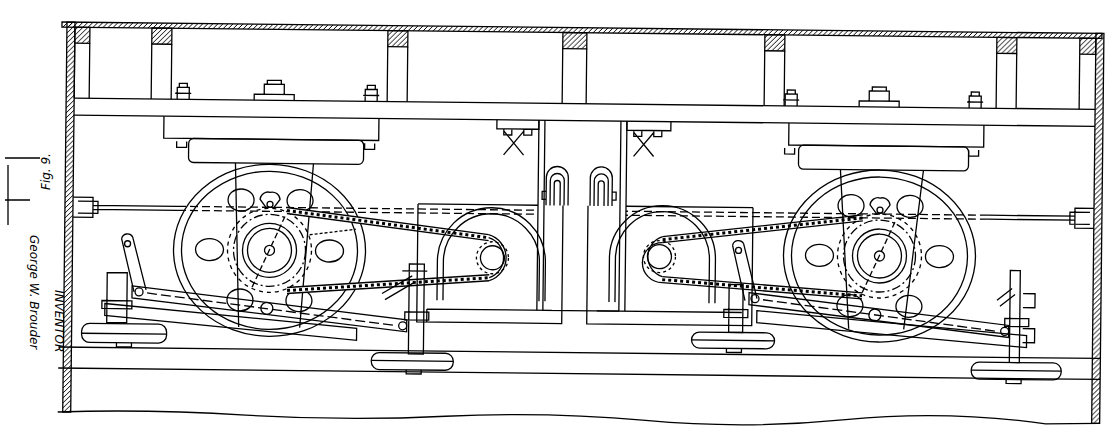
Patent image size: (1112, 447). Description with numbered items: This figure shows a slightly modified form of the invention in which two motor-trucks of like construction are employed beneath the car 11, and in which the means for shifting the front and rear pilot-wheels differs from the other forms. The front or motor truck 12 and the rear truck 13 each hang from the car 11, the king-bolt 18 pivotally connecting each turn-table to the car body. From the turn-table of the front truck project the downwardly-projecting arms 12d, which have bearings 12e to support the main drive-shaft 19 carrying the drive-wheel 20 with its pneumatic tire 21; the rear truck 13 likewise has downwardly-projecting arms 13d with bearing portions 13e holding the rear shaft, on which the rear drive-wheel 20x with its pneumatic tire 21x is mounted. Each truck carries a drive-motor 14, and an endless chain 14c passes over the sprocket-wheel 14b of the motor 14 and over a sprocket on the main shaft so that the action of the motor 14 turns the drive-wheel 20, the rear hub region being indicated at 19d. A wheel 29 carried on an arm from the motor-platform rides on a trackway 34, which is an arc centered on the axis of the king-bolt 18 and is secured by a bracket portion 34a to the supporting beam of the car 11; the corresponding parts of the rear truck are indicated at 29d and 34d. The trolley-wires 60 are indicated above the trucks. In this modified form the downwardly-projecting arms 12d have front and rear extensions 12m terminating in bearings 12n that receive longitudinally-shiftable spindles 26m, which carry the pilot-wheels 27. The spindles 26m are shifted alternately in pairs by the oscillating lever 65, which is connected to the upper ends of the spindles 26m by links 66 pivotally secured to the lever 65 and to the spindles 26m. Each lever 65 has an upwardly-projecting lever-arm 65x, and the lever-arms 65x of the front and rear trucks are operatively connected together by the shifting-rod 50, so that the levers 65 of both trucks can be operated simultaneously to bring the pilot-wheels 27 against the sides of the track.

The car 11 is at (585, 86).
The front or motor truck 12 is at (258, 153).
The downwardly-projecting arms 12d is at (274, 245).
The bearings 12e is at (267, 250).
The front and rear extensions 12m is at (195, 318).
The bearings 12n is at (110, 284).
The rear truck 13 is at (878, 156).
The downwardly-projecting arms 13d is at (881, 250).
The bearing portions 13e is at (879, 256).
The drive-motor 14 is at (490, 264).
The sprocket-wheel 14b is at (490, 255).
The endless chain 14c is at (396, 252).
The king-bolt 18 is at (278, 84).
The main drive-shaft 19 is at (272, 250).
The right wheel hub and chain 19d is at (782, 255).
The drive-wheel 20 is at (381, 248).
The rear supporting or drive wheel 20x is at (880, 256).
The pneumatic tire 21 is at (185, 214).
The pneumatic tire 21x is at (972, 235).
The longitudinally-shiftable spindles 26m is at (425, 335).
The pilot-wheels 27 is at (140, 344).
The wheel 29 is at (552, 178).
The loop guide 29d is at (610, 178).
The trackway 34 is at (582, 215).
The bracket portion 34a is at (516, 141).
The bracket 34d is at (648, 141).
The shifting-rod 50 is at (584, 198).
The trolley-wires 60 is at (670, 258).
The oscillating lever 65 is at (195, 296).
The lever-arms 65x is at (630, 240).
The links 66 is at (124, 256).